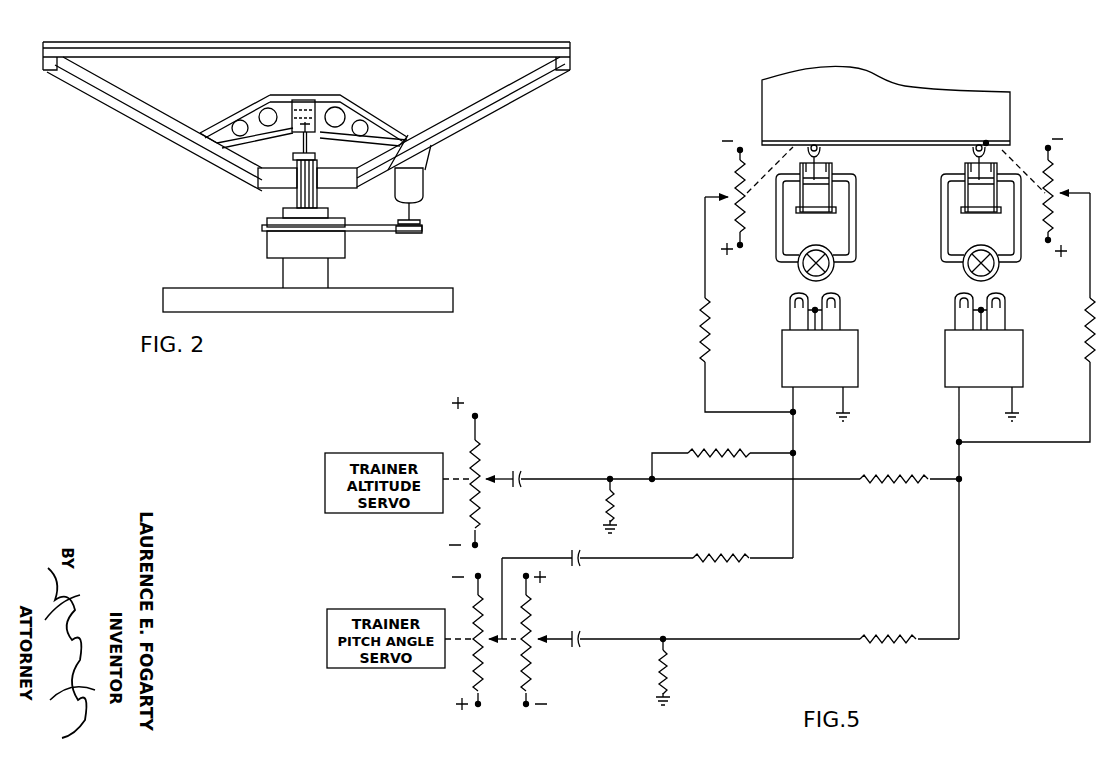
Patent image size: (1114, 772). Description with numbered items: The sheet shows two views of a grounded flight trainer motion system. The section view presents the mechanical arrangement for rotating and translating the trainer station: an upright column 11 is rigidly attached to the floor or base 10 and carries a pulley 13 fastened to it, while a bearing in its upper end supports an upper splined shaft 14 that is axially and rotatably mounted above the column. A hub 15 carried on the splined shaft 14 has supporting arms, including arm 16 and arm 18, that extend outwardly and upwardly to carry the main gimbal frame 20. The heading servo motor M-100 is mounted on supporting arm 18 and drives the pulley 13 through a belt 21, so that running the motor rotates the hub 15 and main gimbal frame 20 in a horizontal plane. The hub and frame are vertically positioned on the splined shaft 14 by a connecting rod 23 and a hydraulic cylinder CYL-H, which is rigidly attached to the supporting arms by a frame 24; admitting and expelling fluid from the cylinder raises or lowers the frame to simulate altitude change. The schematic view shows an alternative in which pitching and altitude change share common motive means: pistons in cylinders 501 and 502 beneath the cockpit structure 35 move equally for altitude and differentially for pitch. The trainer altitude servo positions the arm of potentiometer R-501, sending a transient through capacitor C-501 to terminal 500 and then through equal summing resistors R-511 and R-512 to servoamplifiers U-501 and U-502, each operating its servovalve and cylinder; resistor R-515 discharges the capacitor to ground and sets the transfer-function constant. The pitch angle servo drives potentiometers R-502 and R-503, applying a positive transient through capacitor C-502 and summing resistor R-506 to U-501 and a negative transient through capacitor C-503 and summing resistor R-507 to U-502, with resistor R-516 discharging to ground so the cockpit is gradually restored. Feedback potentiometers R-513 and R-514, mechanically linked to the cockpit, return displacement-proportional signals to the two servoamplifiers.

In FIG. 2, the main gimbal frame 20 is at (484, 43).
In FIG. 2, the supporting arm 16 is at (166, 130).
In FIG. 2, the supporting arm 18 is at (468, 114).
In FIG. 2, the frame 24 is at (264, 108).
In FIG. 2, the hydraulic cylinder CYL-H is at (300, 100).
In FIG. 2, the connecting rod 23 is at (308, 148).
In FIG. 2, the hub 15 is at (338, 186).
In FIG. 2, the upper splined shaft 14 is at (297, 196).
In FIG. 2, the heading servo motor M-100 is at (410, 190).
In FIG. 2, the belt 21 is at (360, 231).
In FIG. 2, the pulley 13 is at (275, 240).
In FIG. 2, the upright column 11 is at (319, 273).
In FIG. 2, the floor or base 10 is at (316, 309).
In FIG. 5, the trainer cockpit structure 35 is at (818, 107).
In FIG. 5, the cylinder 501 is at (834, 186).
In FIG. 5, the cylinder 502 is at (963, 166).
In FIG. 5, the feedback potentiometer R-513 is at (734, 178).
In FIG. 5, the feedback potentiometer R-514 is at (1050, 175).
In FIG. 5, the servoamplifier U-501 is at (820, 425).
In FIG. 5, the servoamplifier U-502 is at (984, 466).
In FIG. 5, the potentiometer R-501 is at (478, 442).
In FIG. 5, the capacitor C-501 is at (523, 490).
In FIG. 5, the terminal 500 is at (621, 462).
In FIG. 5, the resistor R-515 is at (614, 500).
In FIG. 5, the summing resistor R-511 is at (698, 457).
In FIG. 5, the summing resistor R-512 is at (872, 486).
In FIG. 5, the capacitor C-502 is at (579, 568).
In FIG. 5, the summing resistor R-506 is at (708, 568).
In FIG. 5, the potentiometer R-502 is at (474, 681).
In FIG. 5, the potentiometer R-503 is at (528, 682).
In FIG. 5, the capacitor C-503 is at (582, 636).
In FIG. 5, the resistor R-516 is at (672, 670).
In FIG. 5, the summing resistor R-507 is at (871, 651).